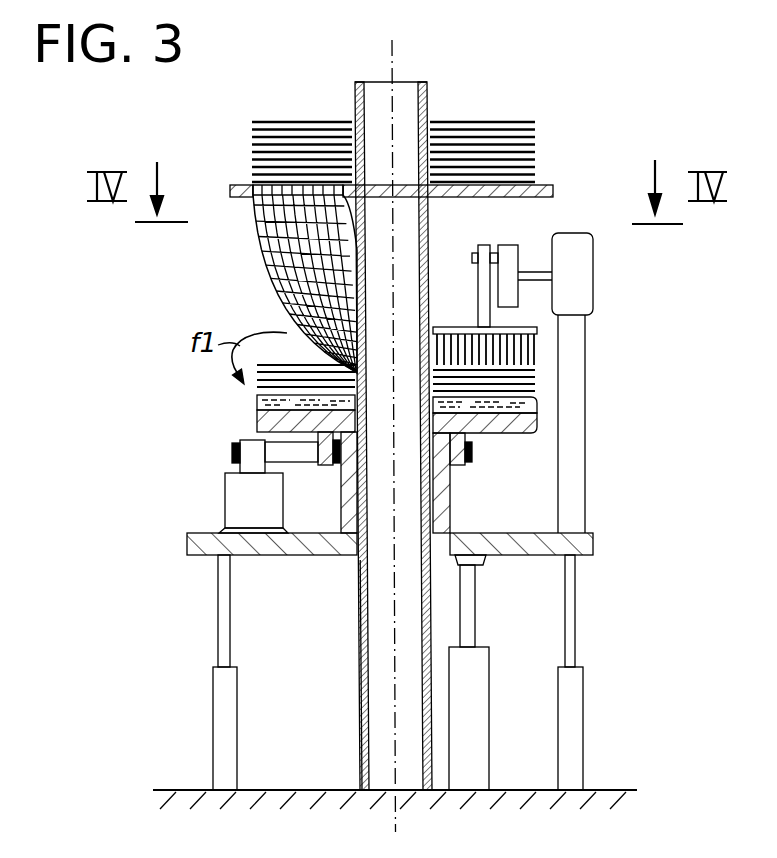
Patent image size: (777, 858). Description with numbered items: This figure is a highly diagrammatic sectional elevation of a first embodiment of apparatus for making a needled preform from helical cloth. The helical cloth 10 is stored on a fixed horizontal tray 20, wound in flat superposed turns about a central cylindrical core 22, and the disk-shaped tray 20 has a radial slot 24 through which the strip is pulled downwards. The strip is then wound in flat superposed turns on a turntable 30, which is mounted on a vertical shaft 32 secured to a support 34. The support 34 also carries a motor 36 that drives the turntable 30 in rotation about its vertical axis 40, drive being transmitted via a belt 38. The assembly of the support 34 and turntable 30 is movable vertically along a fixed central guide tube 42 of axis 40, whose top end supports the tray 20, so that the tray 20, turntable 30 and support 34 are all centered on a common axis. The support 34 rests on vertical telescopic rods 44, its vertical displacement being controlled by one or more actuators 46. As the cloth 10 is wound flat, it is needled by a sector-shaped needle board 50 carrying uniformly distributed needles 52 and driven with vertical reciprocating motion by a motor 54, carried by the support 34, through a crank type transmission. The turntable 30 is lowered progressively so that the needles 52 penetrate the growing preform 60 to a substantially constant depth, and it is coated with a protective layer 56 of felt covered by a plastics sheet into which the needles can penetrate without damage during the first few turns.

The helical cloth 10 is at (510, 125).
The fixed horizontal tray 20 is at (552, 188).
The central cylindrical core 22 is at (428, 96).
The radial slot 24 is at (255, 200).
The turntable 30 is at (522, 424).
The vertical shaft 32 is at (452, 500).
The support 34 is at (578, 548).
The motor 36 is at (240, 490).
The belt 38 is at (287, 448).
The vertical axis 40 is at (394, 598).
The fixed central guide tube 42 is at (363, 686).
The vertical telescopic rods 44 is at (222, 710).
The actuator 46 is at (475, 718).
The needle board 50 is at (452, 327).
The needles 52 is at (527, 352).
The motor 54 is at (578, 284).
The protective layer 56 is at (257, 402).
The preform 60 is at (530, 382).